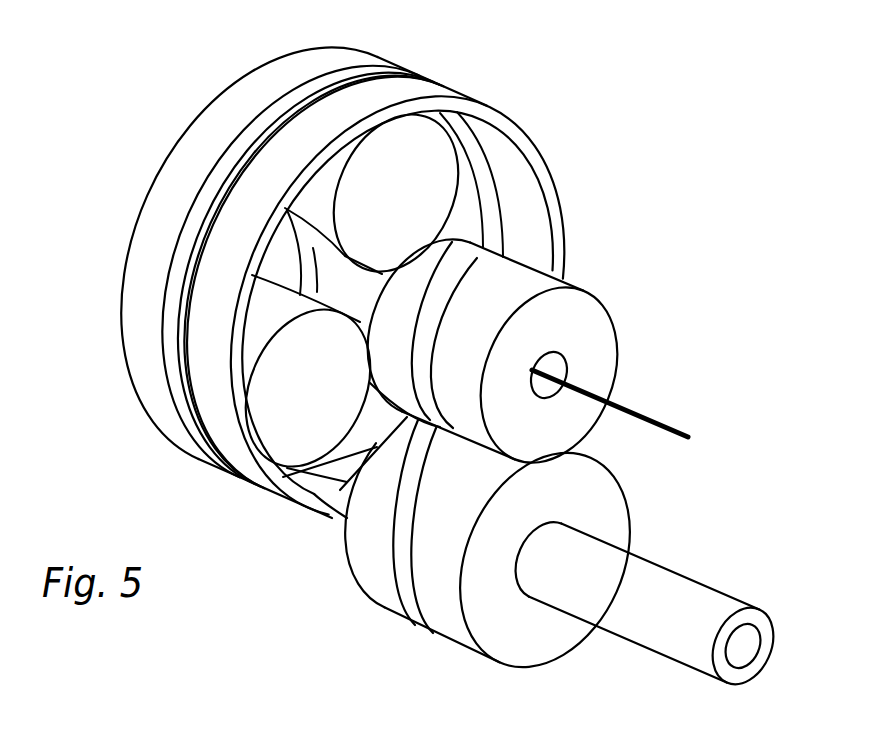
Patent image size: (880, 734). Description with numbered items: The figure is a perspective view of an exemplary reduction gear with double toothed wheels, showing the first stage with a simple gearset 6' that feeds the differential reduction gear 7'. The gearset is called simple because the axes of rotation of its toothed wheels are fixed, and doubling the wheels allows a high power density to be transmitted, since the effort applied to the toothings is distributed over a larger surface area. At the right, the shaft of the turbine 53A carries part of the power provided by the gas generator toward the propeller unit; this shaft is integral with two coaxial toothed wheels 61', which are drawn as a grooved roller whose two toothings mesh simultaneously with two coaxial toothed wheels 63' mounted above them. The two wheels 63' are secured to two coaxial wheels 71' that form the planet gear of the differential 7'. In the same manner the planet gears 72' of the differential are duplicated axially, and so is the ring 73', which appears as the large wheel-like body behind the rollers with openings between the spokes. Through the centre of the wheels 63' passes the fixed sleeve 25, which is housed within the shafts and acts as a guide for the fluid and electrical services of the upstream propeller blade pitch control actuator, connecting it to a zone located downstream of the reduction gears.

The differential reduction gear 7' is at (341, 286).
The planet gears 72' is at (262, 291).
The coaxial wheels 71' is at (267, 297).
The ring 73' is at (441, 307).
The coaxial toothed wheels 63' is at (528, 361).
The fixed sleeve 25 is at (655, 412).
The first stage with a simple gearset 6' is at (510, 557).
The coaxial toothed wheels 61' is at (445, 557).
The shaft of the turbine 53A is at (685, 606).